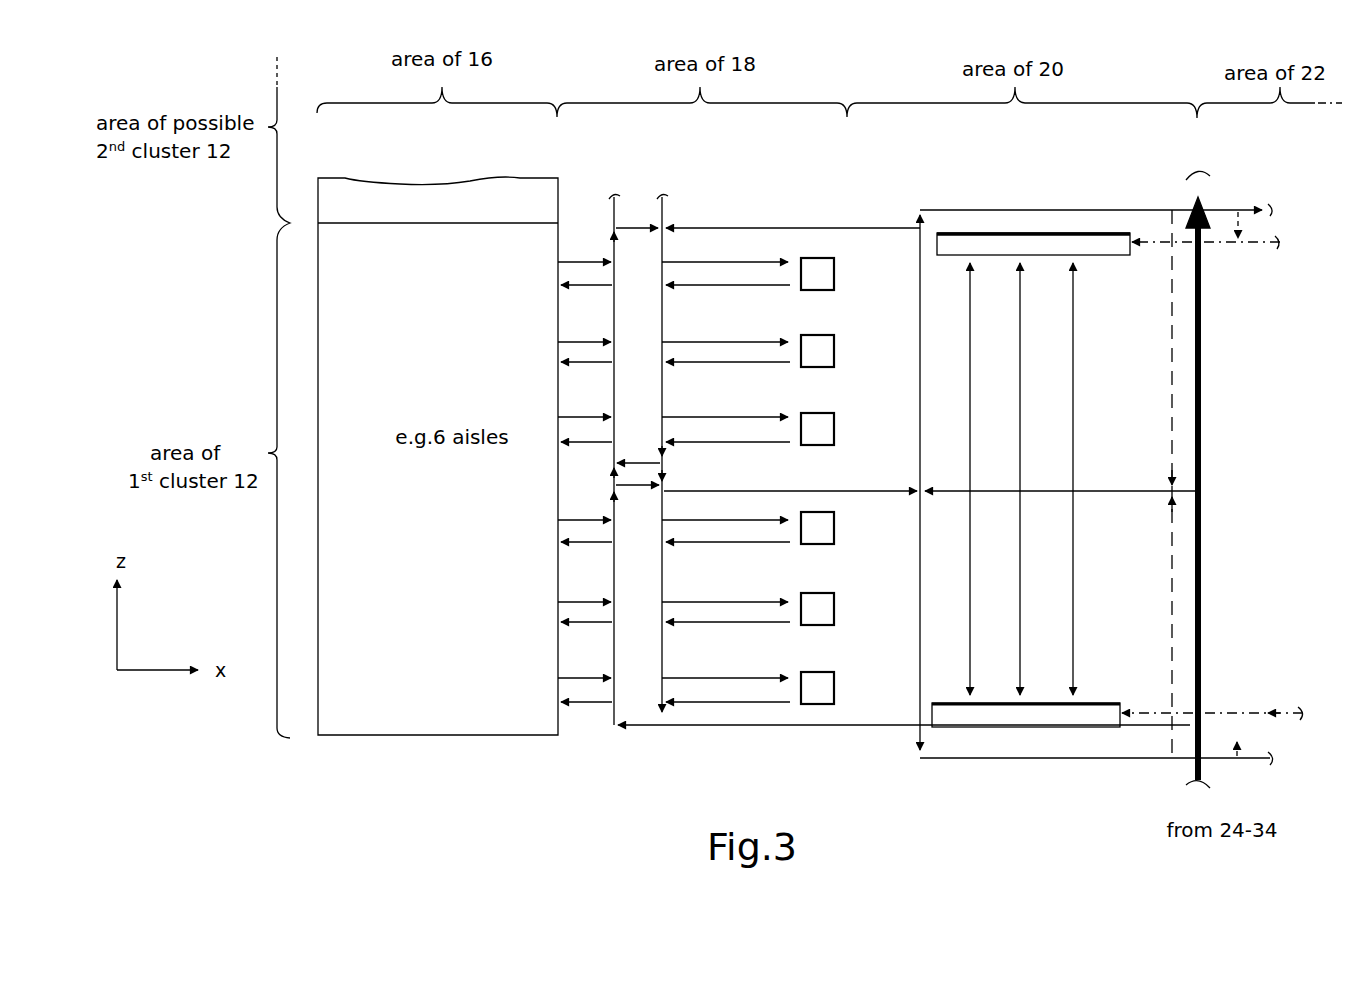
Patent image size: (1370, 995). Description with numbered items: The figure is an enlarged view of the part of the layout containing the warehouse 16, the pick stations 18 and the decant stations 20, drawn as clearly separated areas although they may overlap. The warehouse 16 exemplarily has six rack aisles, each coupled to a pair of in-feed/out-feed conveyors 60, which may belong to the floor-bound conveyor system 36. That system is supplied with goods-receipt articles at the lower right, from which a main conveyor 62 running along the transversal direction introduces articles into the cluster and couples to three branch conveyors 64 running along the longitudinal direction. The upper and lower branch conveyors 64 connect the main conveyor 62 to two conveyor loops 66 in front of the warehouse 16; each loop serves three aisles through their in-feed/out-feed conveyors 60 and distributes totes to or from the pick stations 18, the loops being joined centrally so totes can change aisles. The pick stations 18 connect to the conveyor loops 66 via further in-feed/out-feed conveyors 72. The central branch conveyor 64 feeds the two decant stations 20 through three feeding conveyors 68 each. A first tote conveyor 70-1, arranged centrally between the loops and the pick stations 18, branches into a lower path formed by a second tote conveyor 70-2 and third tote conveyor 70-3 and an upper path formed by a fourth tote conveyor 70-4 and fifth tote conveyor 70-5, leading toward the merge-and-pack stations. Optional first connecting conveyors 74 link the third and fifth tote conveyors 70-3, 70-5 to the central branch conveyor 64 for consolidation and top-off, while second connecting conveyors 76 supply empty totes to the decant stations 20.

The warehouse 16 is at (432, 185).
The pick stations 18 is at (834, 275).
The decant stations 20 is at (1100, 257).
The floor-bound conveyor system 36 is at (1215, 608).
The in-feed/out-feed conveyors 60 is at (606, 268).
The main conveyor 62 is at (1200, 515).
The branch conveyors 64 is at (738, 228).
The conveyor loops 66 is at (638, 275).
The feeding conveyors 68 is at (970, 398).
The first tote conveyor 70-1 is at (850, 490).
The second tote conveyor 70-2 is at (920, 615).
The third tote conveyor 70-3 is at (1017, 759).
The fourth tote conveyor 70-4 is at (952, 368).
The fifth tote conveyor 70-5 is at (1030, 209).
The further in-feed/out-feed conveyors 72 is at (713, 436).
The first connecting conveyors 74 is at (1172, 328).
The second connecting conveyors 76 is at (1280, 243).